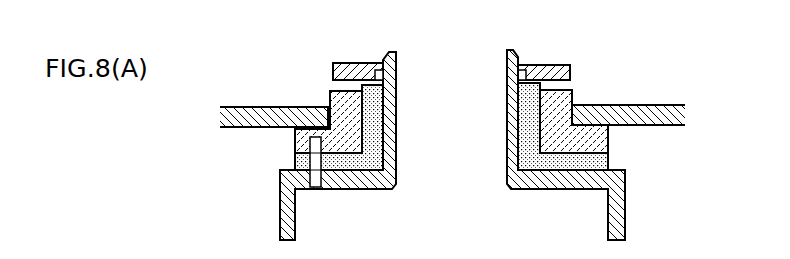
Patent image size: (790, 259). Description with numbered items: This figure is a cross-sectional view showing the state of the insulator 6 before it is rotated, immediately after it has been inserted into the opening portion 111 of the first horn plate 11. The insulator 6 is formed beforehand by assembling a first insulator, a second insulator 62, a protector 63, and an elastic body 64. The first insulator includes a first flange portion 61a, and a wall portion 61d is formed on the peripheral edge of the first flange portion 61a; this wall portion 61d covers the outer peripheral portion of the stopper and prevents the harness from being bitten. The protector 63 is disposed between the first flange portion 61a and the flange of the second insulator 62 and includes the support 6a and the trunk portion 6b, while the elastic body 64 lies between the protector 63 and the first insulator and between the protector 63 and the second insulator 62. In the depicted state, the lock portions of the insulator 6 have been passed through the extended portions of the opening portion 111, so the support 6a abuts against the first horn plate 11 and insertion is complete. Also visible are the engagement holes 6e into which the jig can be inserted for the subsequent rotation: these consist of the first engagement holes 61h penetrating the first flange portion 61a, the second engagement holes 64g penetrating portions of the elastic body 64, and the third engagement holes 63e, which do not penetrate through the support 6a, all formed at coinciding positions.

The first horn plate 11 is at (251, 106).
The opening portion 111 is at (328, 104).
The third engagement hole 63e is at (297, 137).
The second engagement hole 64g is at (304, 156).
The first engagement hole 61h is at (282, 176).
The wall portion 61d is at (282, 211).
The engagement hole 6e is at (316, 193).
The elastic body 64 is at (378, 98).
The protector 63 is at (352, 126).
The second insulator 62 is at (571, 71).
The trunk portion 6b is at (553, 112).
The support 6a is at (609, 139).
The first flange portion 61a is at (550, 190).
The insulator 6 is at (581, 145).